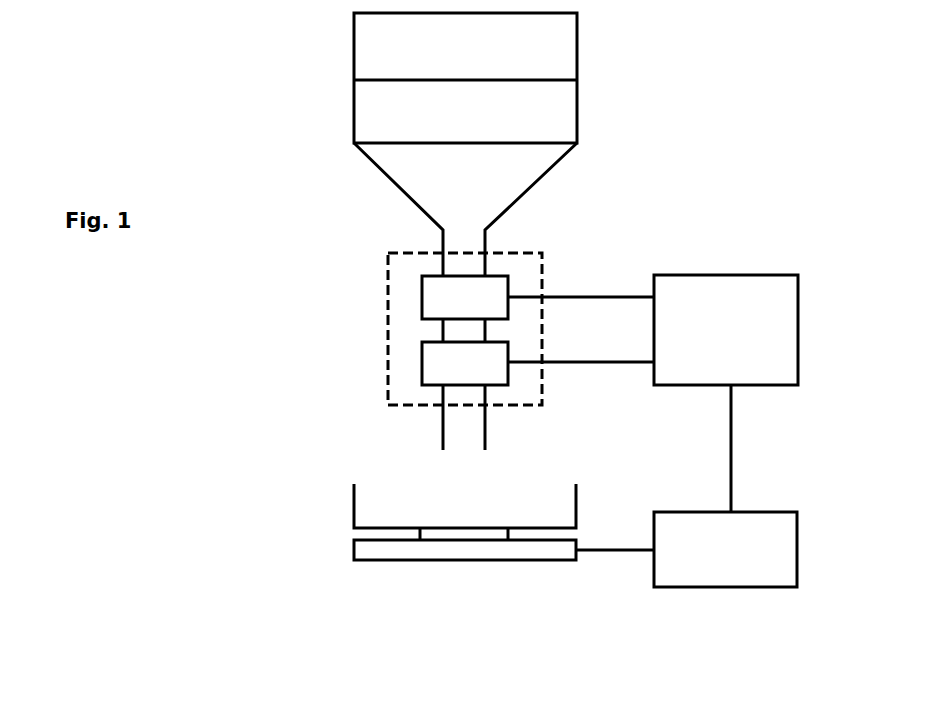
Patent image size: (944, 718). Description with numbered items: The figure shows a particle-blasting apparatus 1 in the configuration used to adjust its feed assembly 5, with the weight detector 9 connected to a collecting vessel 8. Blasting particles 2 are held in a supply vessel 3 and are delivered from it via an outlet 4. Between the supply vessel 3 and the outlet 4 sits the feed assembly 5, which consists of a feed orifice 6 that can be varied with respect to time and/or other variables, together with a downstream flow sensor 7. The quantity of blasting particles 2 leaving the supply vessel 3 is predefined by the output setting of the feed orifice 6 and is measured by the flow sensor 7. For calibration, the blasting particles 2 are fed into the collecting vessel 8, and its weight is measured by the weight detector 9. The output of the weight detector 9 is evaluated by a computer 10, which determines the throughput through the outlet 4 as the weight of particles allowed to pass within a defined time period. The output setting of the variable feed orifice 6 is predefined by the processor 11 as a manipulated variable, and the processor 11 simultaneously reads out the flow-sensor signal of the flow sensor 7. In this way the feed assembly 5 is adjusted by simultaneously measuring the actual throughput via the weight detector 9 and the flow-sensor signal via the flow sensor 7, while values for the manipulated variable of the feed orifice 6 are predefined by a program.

The particle-blasting apparatus 1 is at (660, 142).
The blasting particles 2 is at (401, 150).
The supply vessel 3 is at (354, 50).
The outlet 4 is at (443, 440).
The feed assembly 5 is at (388, 277).
The feed orifice 6 is at (432, 300).
The flow sensor 7 is at (435, 368).
The collecting vessel 8 is at (354, 505).
The weight detector 9 is at (354, 547).
The computer 10 is at (783, 550).
The processor 11 is at (798, 317).